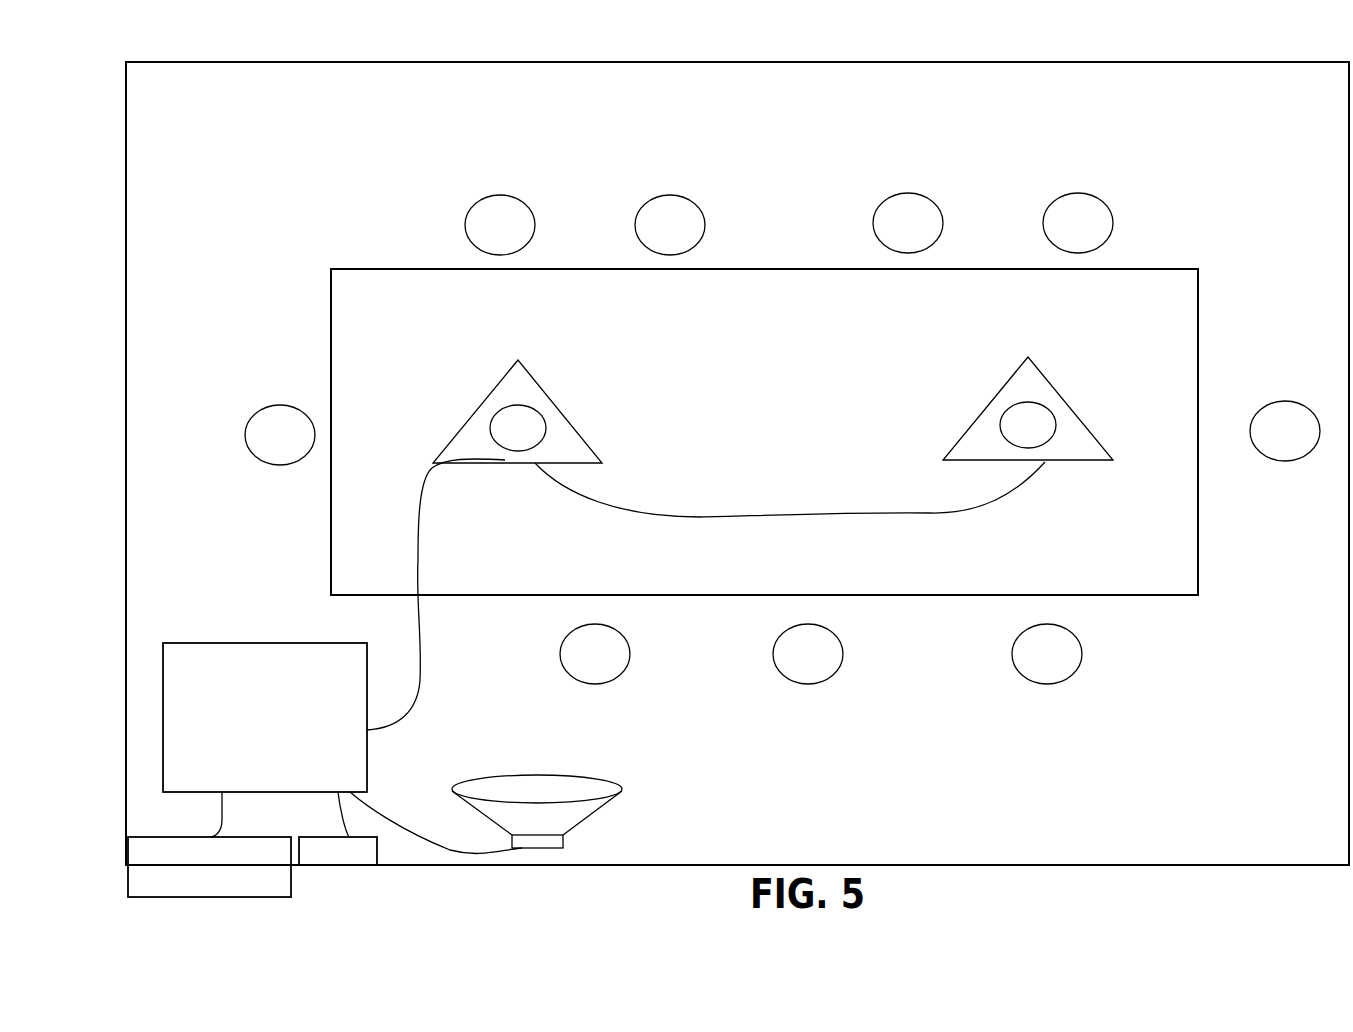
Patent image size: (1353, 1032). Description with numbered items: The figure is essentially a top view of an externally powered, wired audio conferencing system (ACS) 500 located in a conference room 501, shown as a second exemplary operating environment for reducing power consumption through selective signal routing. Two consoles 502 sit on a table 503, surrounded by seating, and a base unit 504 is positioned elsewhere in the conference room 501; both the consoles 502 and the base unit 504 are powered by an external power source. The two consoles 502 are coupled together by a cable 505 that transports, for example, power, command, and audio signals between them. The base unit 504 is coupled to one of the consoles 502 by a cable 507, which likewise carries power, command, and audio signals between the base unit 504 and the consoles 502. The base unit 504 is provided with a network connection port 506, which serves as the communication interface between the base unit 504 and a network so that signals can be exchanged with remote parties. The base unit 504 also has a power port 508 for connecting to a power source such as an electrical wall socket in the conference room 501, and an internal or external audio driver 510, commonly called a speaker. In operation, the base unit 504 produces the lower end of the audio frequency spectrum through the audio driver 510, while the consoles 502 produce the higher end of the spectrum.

The audio conferencing system 500 is at (340, 483).
The conference room 501 is at (737, 463).
The console 502 is at (578, 428).
The table 503 is at (764, 432).
The base unit 504 is at (212, 643).
The cable 505 is at (765, 507).
The network connection port 506 is at (210, 897).
The cable 507 is at (418, 552).
The power port 508 is at (337, 867).
The audio driver 510 is at (622, 790).